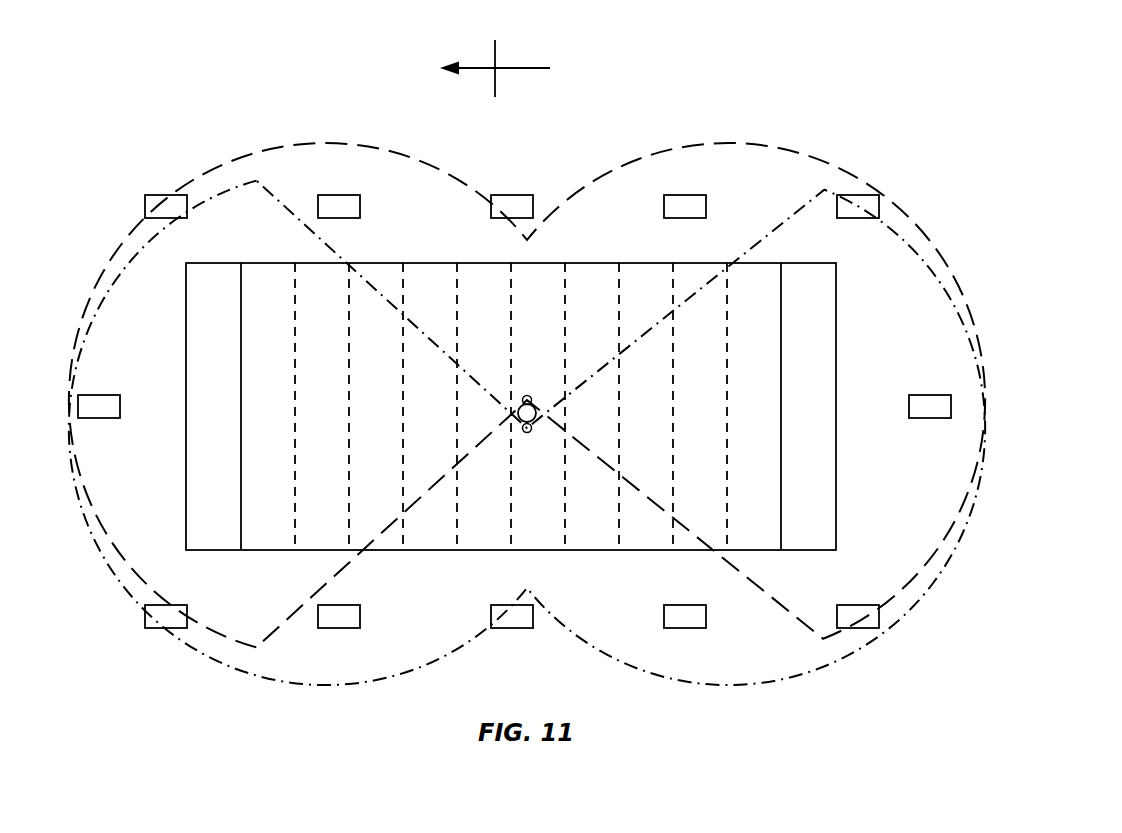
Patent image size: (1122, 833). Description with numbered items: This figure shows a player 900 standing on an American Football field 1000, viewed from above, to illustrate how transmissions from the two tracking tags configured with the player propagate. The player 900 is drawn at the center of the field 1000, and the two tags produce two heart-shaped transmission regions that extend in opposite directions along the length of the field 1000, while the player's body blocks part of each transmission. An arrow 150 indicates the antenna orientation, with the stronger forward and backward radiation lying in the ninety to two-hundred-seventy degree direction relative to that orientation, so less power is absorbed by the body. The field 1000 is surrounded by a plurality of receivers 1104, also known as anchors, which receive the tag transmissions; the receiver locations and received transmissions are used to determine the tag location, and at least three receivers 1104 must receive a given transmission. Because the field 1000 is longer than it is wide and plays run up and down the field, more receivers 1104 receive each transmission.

The arrow 150 is at (483, 67).
The American Football field 1000 is at (161, 279).
The receivers 1104 is at (528, 197).
The player 900 is at (537, 410).